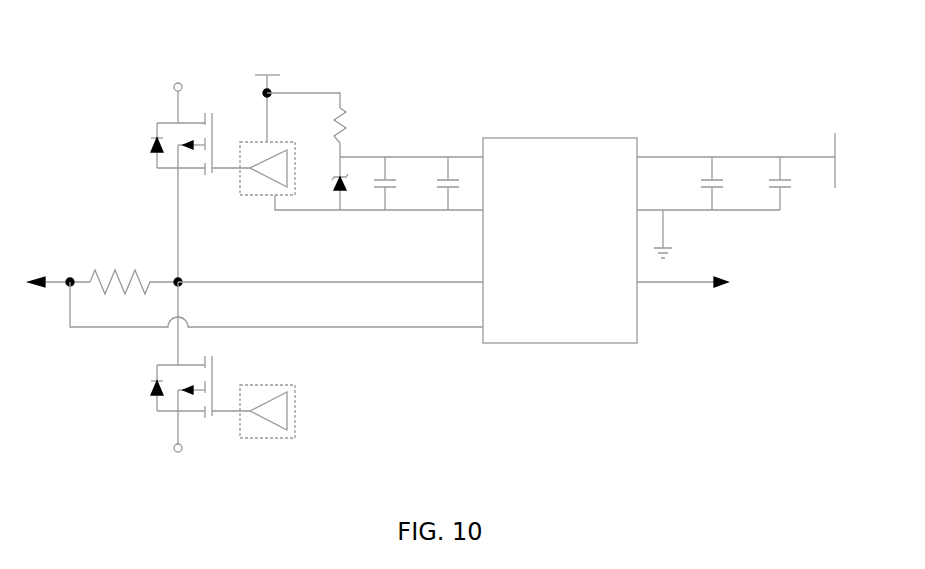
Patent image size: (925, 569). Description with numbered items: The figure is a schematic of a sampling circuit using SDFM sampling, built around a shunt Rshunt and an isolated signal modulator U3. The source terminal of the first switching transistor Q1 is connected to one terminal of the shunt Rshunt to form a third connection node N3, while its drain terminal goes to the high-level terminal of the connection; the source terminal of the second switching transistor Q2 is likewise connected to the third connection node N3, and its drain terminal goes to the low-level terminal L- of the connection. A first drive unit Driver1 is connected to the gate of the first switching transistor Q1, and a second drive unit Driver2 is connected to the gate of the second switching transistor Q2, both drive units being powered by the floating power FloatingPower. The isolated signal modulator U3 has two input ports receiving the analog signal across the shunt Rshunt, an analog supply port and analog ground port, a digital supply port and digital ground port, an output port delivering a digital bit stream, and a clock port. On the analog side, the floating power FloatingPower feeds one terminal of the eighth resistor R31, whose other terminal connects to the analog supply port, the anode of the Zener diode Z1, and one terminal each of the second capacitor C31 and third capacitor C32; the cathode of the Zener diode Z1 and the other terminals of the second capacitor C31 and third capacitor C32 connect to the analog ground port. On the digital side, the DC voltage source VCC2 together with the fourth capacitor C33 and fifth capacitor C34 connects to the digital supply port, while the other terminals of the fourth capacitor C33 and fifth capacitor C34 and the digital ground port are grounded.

The negative terminal L- is at (176, 462).
The upper MOSFET switch Q1 is at (200, 197).
The lower MOSFET switch Q2 is at (200, 363).
The first drive unit Driver1 is at (346, 144).
The second drive unit Driver2 is at (268, 424).
The floating power FloatingPower is at (290, 71).
The eighth resistor R31 is at (408, 132).
The Zener diode Z1 is at (328, 183).
The second capacitor C31 is at (376, 183).
The third capacitor C32 is at (439, 183).
The fourth capacitor C33 is at (701, 183).
The fifth capacitor C34 is at (769, 183).
The isolated signal modulator U3 is at (659, 229).
The DC voltage source VCC2 is at (846, 160).
The shunt Rshunt is at (255, 285).
The third connection node N3 is at (328, 271).